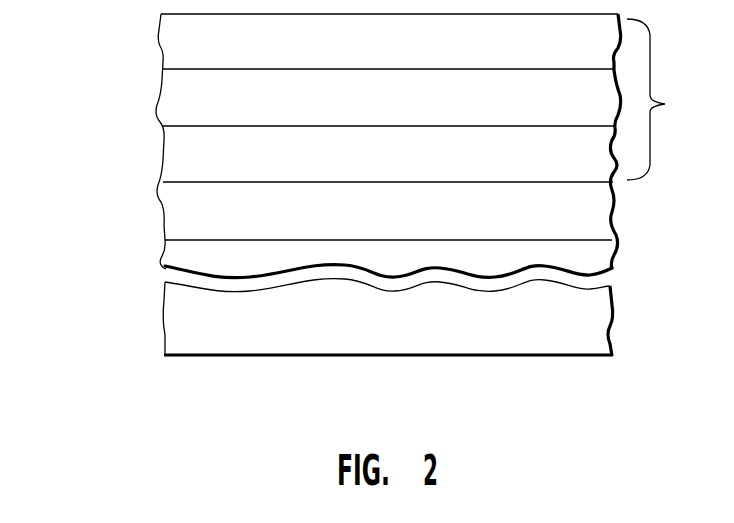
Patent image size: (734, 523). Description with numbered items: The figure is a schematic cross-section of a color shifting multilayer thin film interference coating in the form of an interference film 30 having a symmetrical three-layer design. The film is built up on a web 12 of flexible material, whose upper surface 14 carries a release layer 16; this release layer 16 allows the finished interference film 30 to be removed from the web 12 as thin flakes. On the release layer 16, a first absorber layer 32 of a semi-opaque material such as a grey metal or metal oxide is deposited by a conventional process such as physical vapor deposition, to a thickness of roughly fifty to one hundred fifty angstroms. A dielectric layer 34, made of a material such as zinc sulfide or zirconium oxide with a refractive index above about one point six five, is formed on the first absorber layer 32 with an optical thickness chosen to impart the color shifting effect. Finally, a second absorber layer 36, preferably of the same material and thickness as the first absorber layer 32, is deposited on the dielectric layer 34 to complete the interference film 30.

The web 12 is at (184, 318).
The upper surface 14 is at (213, 234).
The release layer 16 is at (186, 205).
The interference film 30 is at (662, 99).
The first absorber layer 32 is at (186, 151).
The dielectric layer 34 is at (186, 95).
The second absorber layer 36 is at (186, 38).